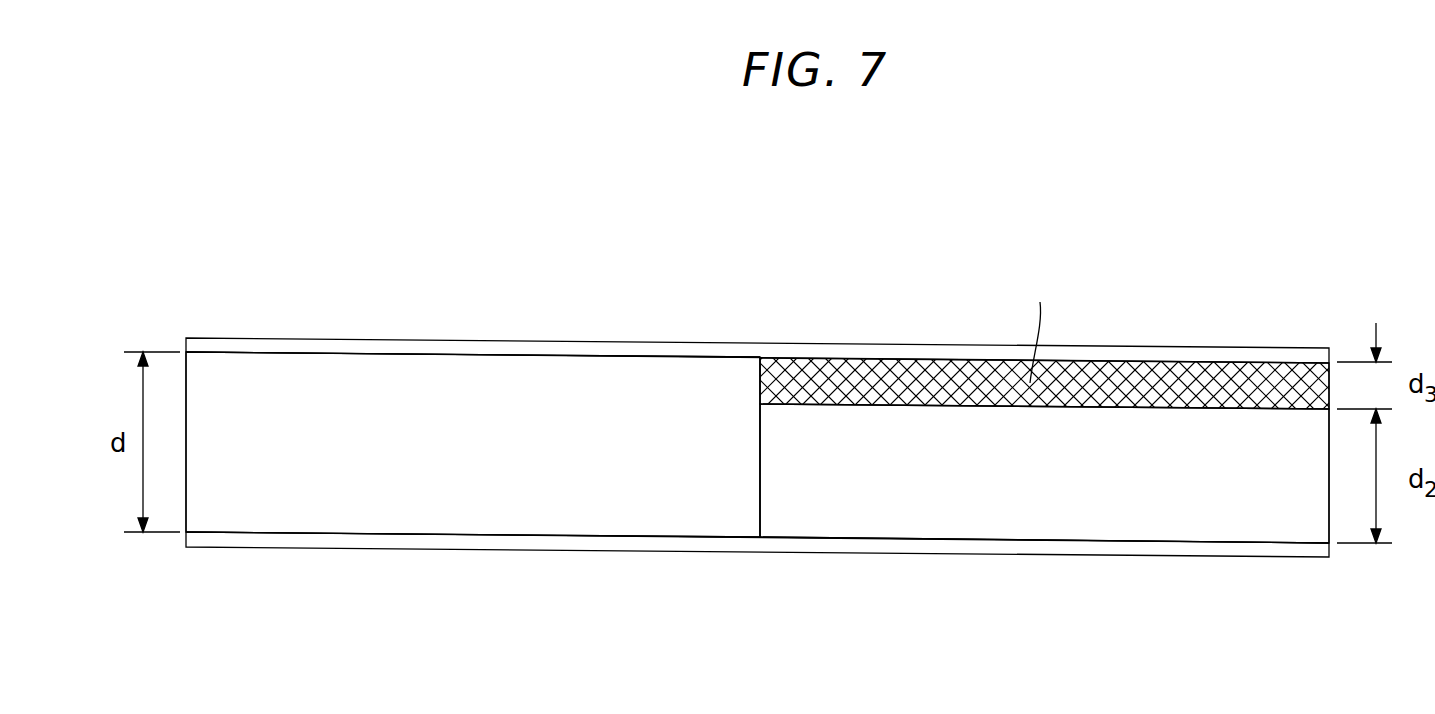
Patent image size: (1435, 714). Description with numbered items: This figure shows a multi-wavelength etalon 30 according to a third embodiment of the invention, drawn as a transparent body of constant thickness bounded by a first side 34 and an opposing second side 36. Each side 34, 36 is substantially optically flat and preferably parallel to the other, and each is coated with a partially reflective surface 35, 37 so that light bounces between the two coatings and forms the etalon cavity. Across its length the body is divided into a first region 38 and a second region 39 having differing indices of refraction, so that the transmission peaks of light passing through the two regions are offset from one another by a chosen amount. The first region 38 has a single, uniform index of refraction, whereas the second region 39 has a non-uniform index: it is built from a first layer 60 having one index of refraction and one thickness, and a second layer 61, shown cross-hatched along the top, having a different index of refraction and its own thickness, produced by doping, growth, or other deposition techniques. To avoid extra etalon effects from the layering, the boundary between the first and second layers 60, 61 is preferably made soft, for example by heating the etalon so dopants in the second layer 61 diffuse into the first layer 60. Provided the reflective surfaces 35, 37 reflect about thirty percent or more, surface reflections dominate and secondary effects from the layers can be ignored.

The multi-wavelength etalon 30 is at (158, 246).
The first side 34 is at (406, 344).
The partially reflective surface 35 is at (247, 334).
The second side 36 is at (406, 544).
The partially reflective surface 37 is at (246, 548).
The first region 38 is at (613, 493).
The second region 39 is at (855, 495).
The first layer 60 is at (1221, 498).
The second layer 61 is at (850, 383).